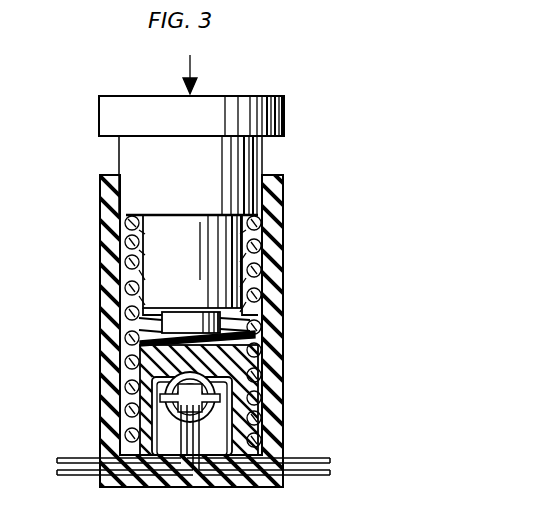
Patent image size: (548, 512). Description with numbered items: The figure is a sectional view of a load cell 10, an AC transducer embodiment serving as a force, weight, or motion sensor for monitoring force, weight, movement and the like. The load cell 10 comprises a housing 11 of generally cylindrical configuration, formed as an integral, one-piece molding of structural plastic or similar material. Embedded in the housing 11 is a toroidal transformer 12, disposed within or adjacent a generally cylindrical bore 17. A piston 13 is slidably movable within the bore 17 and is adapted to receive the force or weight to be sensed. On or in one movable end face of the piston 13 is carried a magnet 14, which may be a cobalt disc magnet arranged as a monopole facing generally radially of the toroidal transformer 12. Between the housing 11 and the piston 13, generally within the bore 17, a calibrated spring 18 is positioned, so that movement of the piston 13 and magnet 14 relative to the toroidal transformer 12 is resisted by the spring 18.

The load cell 10 is at (287, 200).
The housing 11 is at (272, 388).
The toroidal transformer 12 is at (170, 345).
The piston 13 is at (133, 153).
The magnet 14 is at (160, 324).
The cylindrical bore 17 is at (256, 258).
The calibrated spring 18 is at (258, 301).